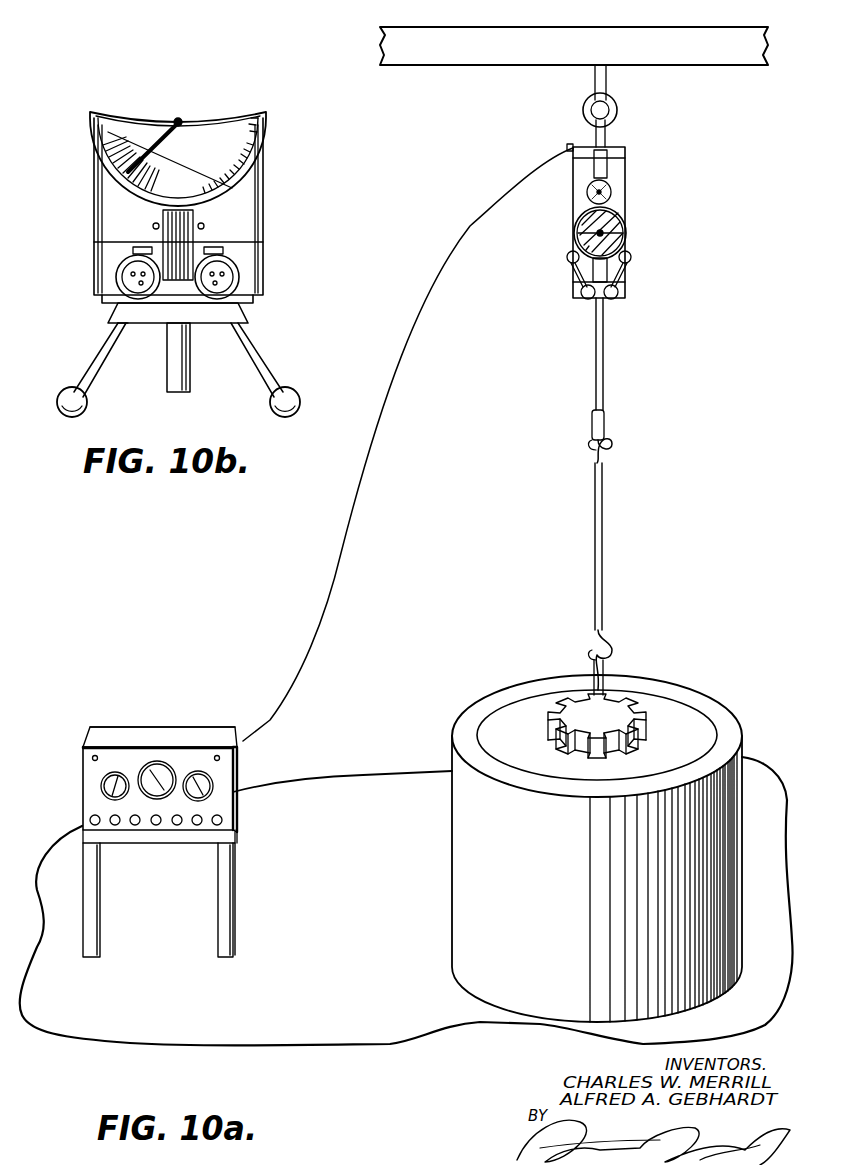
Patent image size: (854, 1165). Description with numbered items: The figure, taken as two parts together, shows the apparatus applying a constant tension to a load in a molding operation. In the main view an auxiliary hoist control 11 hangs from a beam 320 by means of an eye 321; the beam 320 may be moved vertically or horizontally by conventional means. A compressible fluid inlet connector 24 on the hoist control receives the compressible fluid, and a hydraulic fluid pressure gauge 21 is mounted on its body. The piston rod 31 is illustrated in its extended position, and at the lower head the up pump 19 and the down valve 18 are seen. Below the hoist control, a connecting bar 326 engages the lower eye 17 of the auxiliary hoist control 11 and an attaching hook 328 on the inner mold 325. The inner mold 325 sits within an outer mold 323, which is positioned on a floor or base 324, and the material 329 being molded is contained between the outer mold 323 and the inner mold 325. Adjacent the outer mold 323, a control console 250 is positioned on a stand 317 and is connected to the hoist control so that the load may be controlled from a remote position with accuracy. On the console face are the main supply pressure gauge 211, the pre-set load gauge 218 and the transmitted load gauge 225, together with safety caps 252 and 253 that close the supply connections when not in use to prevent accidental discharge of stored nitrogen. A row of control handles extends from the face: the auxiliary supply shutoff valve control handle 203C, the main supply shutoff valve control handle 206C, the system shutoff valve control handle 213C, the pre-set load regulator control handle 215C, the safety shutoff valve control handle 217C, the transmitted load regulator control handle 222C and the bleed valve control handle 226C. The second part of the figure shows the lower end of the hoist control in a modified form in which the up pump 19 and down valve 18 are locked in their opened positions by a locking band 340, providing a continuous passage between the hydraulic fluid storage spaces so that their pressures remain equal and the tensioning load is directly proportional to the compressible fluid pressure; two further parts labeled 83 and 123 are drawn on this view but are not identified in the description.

In FIG. 10B, the auxiliary hoist control 11 is at (95, 190).
In FIG. 10A, the auxiliary hoist control 11 is at (630, 211).
In FIG. 10B, the hydraulic fluid pressure gauge 21 is at (258, 140).
In FIG. 10A, the hydraulic fluid pressure gauge 21 is at (624, 247).
In FIG. 10B, the up pump assembly 19 is at (118, 272).
In FIG. 10A, the up pump assembly 19 is at (586, 297).
In FIG. 10B, the down valve assembly 18 is at (234, 280).
In FIG. 10A, the down valve assembly 18 is at (613, 298).
In FIG. 10B, the left leg 83 is at (100, 340).
In FIG. 10A, the left leg 83 is at (570, 273).
In FIG. 10B, the right leg 123 is at (262, 338).
In FIG. 10A, the right leg 123 is at (630, 273).
In FIG. 10B, the piston rod 31 is at (190, 358).
In FIG. 10A, the piston rod 31 is at (605, 335).
In FIG. 10B, the locking band 340 is at (142, 326).
In FIG. 10A, the beam 320 is at (410, 66).
In FIG. 10A, the eye 321 is at (610, 82).
In FIG. 10A, the compressible fluid inlet connector 24 is at (572, 145).
In FIG. 10A, the lower eye 17 is at (607, 420).
In FIG. 10A, the connecting bar 326 is at (604, 524).
In FIG. 10A, the attaching hook 328 is at (588, 645).
In FIG. 10A, the material 329 is at (522, 705).
In FIG. 10A, the inner mold 325 is at (618, 706).
In FIG. 10A, the outer mold 323 is at (708, 700).
In FIG. 10A, the floor or base 324 is at (306, 1030).
In FIG. 10A, the stand 317 is at (222, 900).
In FIG. 10A, the safety cap 253 is at (88, 755).
In FIG. 10A, the control console 250 is at (170, 733).
In FIG. 10A, the transmitted load gauge 225 is at (150, 761).
In FIG. 10A, the safety cap 252 is at (217, 755).
In FIG. 10A, the main supply pressure gauge 211 is at (103, 776).
In FIG. 10A, the pre-set load gauge 218 is at (214, 778).
In FIG. 10A, the auxiliary supply shutoff valve control handle 203C is at (94, 813).
In FIG. 10A, the main supply shutoff valve control handle 206C is at (116, 826).
In FIG. 10A, the system shutoff valve control handle 213C is at (133, 815).
In FIG. 10A, the transmitted load regulator control handle 222C is at (157, 826).
In FIG. 10A, the safety shutoff valve control handle 217C is at (178, 826).
In FIG. 10A, the pre-set load regulator control handle 215C is at (199, 826).
In FIG. 10A, the bleed valve control handle 226C is at (221, 817).